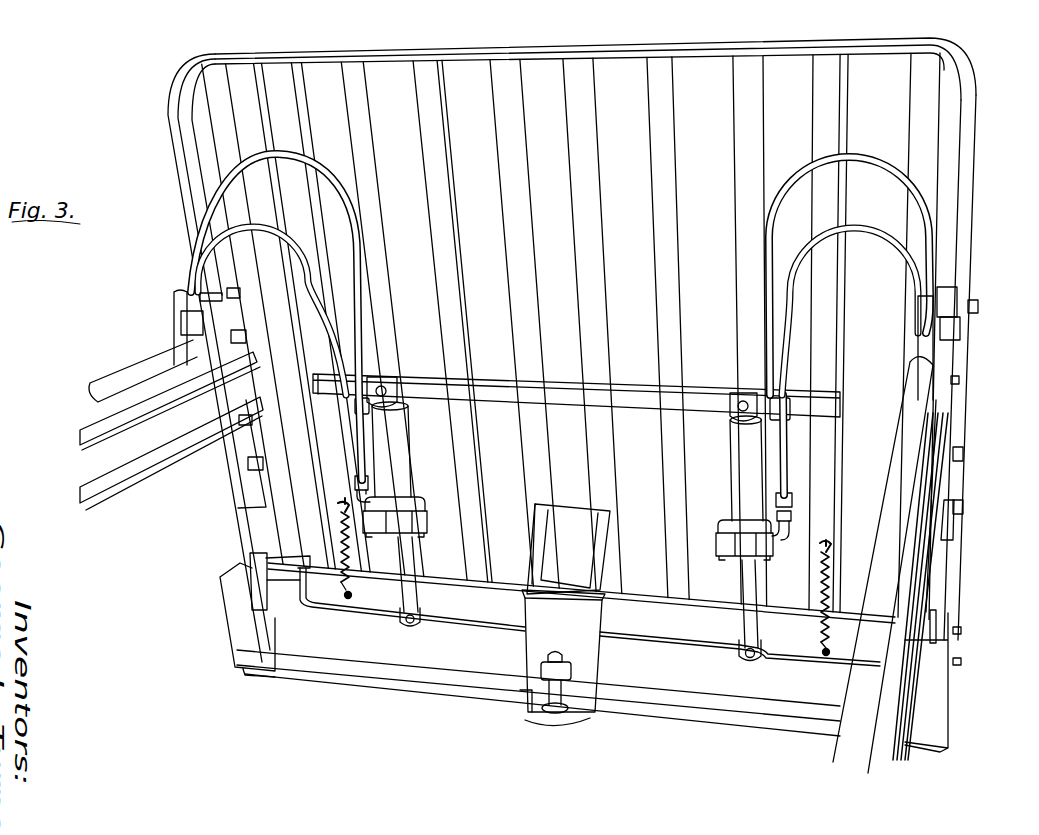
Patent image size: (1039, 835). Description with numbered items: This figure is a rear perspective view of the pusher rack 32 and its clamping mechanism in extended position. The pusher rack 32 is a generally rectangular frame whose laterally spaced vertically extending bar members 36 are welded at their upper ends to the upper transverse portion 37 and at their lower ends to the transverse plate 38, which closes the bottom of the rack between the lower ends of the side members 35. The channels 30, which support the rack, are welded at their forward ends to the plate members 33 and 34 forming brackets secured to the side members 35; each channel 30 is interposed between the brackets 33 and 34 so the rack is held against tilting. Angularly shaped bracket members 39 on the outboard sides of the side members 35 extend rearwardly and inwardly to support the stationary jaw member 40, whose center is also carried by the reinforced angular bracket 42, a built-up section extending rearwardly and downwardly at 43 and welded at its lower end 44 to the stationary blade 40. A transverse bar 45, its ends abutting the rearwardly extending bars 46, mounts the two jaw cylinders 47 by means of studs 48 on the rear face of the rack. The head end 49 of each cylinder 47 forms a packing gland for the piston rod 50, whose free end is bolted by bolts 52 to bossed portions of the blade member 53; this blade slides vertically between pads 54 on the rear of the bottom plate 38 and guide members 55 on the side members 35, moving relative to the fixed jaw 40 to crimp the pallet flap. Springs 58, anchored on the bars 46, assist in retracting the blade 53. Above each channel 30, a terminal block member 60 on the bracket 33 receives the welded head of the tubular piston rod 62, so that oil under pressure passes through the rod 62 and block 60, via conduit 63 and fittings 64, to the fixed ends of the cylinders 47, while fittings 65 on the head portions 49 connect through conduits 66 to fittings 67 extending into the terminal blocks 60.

The channels 30 is at (133, 470).
The pusher rack 32 is at (152, 132).
The plate member bracket 33 is at (173, 302).
The plate member bracket 34 is at (236, 448).
The side members 35 is at (189, 148).
The vertically extending bar members 36 is at (583, 188).
The upper transverse portion 37 is at (560, 46).
The transverse plate 38 is at (652, 612).
The angularly shaped bracket members 39 is at (231, 569).
The stationary jaw member 40 is at (382, 682).
The reinforced angular bracket 42 is at (571, 506).
The rearwardly and downwardly extending section 43 is at (528, 692).
The welded lower end 44 is at (598, 714).
The transverse bar 45 is at (556, 386).
The rearwardly extending bars 46 is at (278, 118).
The jaw cylinders 47 is at (392, 460).
The studs 48 is at (397, 380).
The head end 49 is at (414, 510).
The piston rods 50 is at (422, 564).
The bolts 52 is at (404, 623).
The blade member 53 is at (458, 636).
The pads 54 is at (290, 578).
The guide members 55 is at (258, 556).
The springs 58 is at (342, 589).
The terminal block member 60 is at (185, 325).
The tubular piston rod 62 is at (136, 366).
The conduit 63 is at (188, 266).
The fittings 64 is at (401, 412).
The fittings 65 is at (366, 506).
The conduits 66 is at (319, 166).
The fittings 67 is at (212, 300).